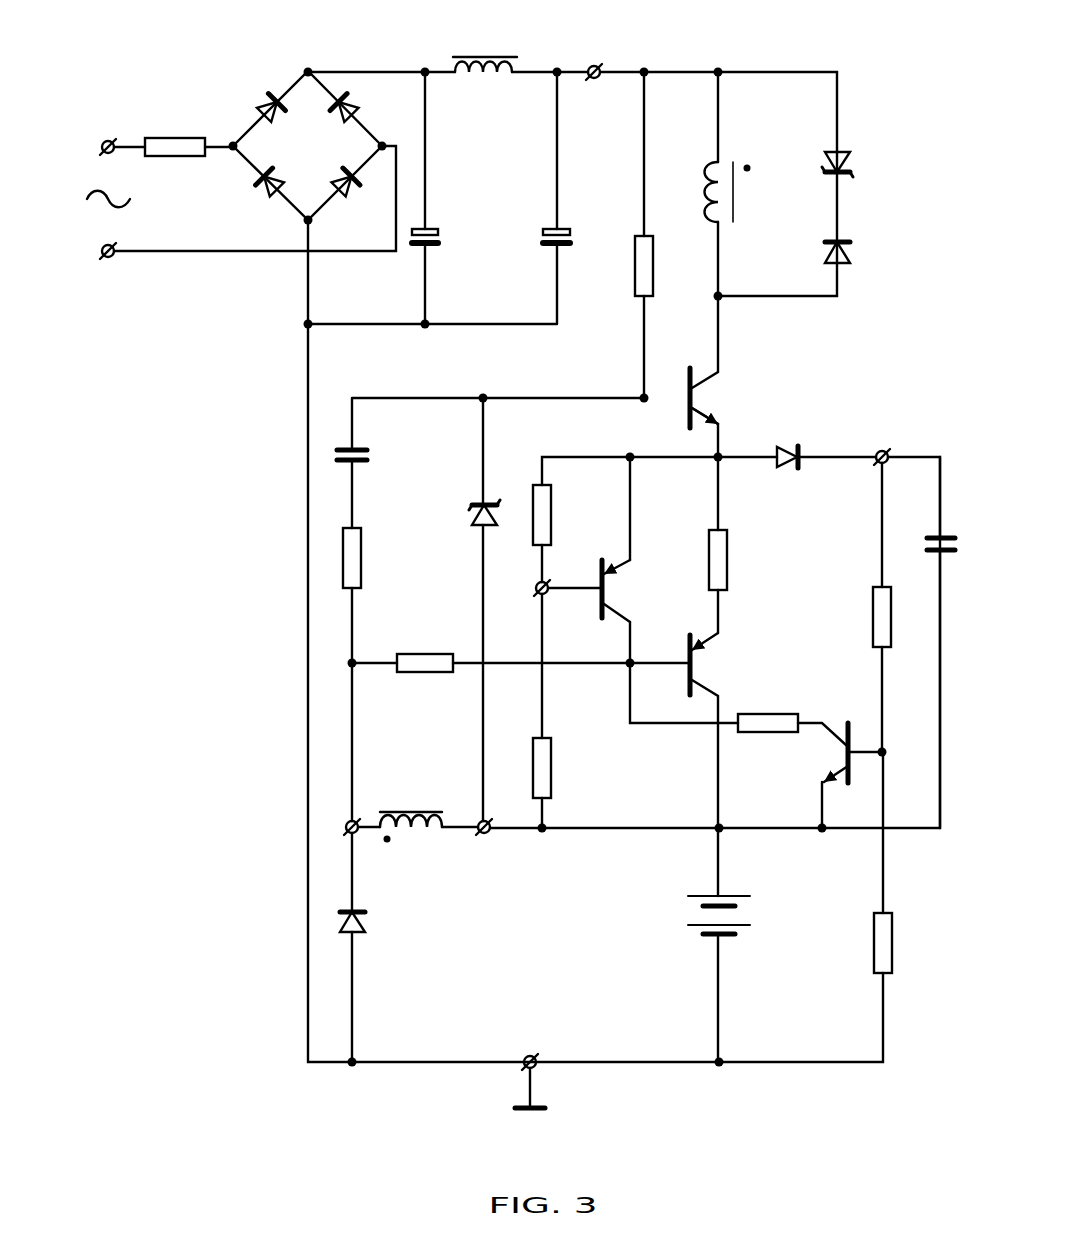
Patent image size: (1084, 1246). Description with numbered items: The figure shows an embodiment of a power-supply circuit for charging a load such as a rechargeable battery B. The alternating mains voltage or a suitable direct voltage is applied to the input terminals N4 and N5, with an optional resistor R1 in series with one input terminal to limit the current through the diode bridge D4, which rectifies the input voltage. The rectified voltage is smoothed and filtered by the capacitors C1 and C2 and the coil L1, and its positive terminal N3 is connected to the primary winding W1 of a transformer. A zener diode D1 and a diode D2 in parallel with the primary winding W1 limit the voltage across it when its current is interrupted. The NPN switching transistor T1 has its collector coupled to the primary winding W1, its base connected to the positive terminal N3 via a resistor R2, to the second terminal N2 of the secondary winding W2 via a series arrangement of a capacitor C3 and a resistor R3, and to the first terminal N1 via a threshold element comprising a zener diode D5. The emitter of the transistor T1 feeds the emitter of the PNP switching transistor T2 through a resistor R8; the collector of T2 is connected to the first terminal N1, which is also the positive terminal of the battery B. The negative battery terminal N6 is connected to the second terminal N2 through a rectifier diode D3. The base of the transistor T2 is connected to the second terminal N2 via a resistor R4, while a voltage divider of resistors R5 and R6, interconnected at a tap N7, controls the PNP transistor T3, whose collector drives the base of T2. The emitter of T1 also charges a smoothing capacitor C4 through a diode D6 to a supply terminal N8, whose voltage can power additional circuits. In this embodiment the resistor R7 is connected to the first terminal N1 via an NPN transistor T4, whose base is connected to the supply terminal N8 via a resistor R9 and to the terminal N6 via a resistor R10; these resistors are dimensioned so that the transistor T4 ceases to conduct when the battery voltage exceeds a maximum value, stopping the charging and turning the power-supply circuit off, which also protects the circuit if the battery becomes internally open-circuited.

The input terminal N4 is at (112, 137).
The resistor R1 is at (181, 136).
The input terminal N5 is at (108, 262).
The diode bridge D4 is at (322, 159).
The coil L1 is at (483, 56).
The positive terminal N3 is at (596, 64).
The capacitor C1 is at (437, 226).
The capacitor C2 is at (549, 226).
The resistor R2 is at (634, 266).
The primary winding W1 is at (733, 203).
The zener diode D1 is at (851, 158).
The diode D2 is at (851, 253).
The switching transistor T1 is at (712, 398).
The capacitor C3 is at (368, 456).
The resistor R3 is at (363, 558).
The resistor R4 is at (428, 673).
The zener diode D5 is at (471, 515).
The resistor R5 is at (552, 513).
The tap N7 is at (534, 592).
The switching transistor T3 is at (617, 588).
The resistor R8 is at (728, 558).
The diode D6 is at (783, 470).
The supply terminal N8 is at (882, 443).
The smoothing capacitor C4 is at (925, 545).
The resistor R9 is at (872, 622).
The switching transistor T2 is at (715, 652).
The resistor R7 is at (790, 712).
The resistor R6 is at (553, 722).
The transistor T4 is at (825, 760).
The second terminal N2 is at (346, 825).
The secondary winding W2 is at (417, 830).
The first terminal N1 is at (487, 835).
The rectifier diode D3 is at (366, 923).
The rechargeable battery B is at (702, 915).
The resistor R10 is at (872, 947).
The terminal N6 is at (527, 1053).